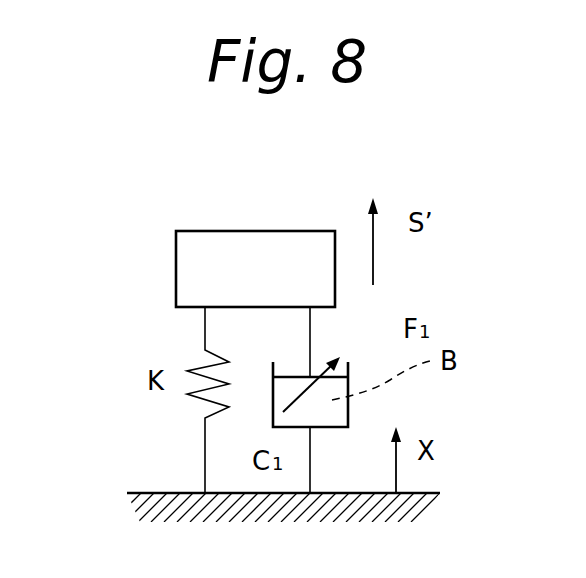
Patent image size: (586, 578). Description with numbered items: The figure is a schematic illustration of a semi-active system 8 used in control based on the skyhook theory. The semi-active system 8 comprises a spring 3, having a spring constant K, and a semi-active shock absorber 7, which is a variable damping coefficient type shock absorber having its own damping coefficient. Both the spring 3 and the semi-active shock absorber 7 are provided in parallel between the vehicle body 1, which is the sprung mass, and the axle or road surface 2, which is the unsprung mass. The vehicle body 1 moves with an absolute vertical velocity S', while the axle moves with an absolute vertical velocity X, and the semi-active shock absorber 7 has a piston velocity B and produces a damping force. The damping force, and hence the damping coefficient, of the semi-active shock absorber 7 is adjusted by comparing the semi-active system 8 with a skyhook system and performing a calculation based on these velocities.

The vehicle body 1 is at (176, 267).
The road surface 2 is at (155, 509).
The spring 3 is at (200, 398).
The semi-active shock absorber 7 is at (348, 418).
The semi-active system 8 is at (456, 306).